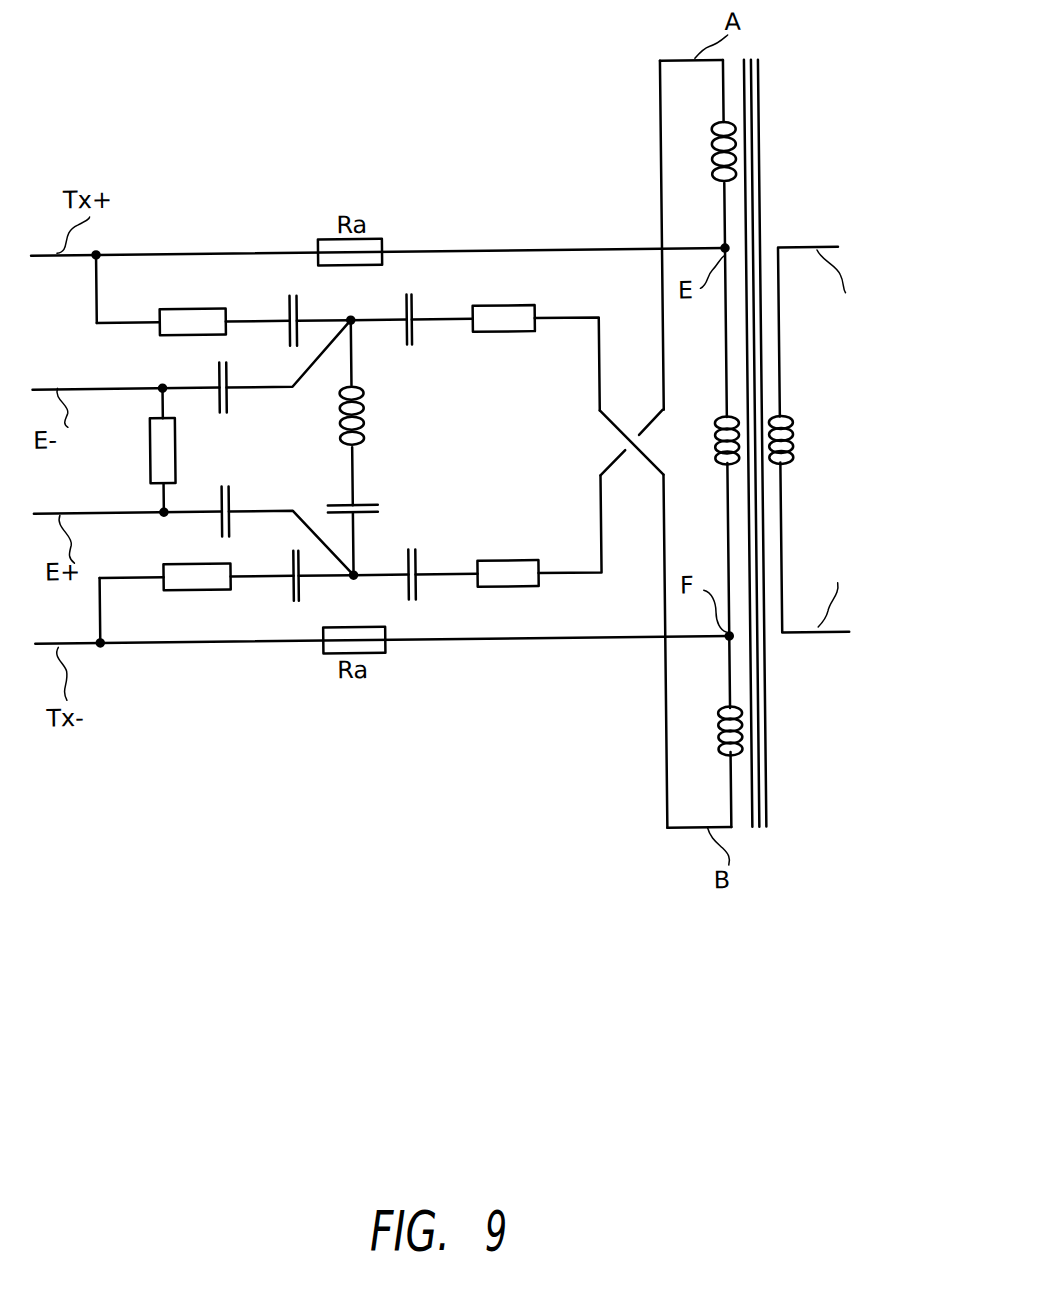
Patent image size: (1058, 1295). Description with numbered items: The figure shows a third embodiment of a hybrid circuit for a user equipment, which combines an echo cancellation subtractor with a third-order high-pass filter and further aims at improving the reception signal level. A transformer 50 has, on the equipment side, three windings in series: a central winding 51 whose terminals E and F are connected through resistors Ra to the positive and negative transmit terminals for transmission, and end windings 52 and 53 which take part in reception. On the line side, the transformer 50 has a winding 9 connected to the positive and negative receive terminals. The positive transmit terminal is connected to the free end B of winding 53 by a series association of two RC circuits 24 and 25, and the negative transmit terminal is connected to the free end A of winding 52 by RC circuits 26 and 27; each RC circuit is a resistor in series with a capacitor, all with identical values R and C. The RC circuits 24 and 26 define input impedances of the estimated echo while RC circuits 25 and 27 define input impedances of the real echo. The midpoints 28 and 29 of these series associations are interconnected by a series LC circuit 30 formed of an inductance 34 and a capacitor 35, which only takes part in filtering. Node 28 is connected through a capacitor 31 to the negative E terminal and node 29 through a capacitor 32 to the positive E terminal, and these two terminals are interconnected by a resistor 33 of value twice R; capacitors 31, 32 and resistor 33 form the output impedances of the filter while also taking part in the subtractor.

The winding 9 is at (793, 428).
The RC circuit 24 is at (237, 299).
The RC circuit 25 is at (441, 356).
The RC circuit 26 is at (243, 594).
The RC circuit 27 is at (451, 541).
The midpoint 28 is at (354, 312).
The midpoint 29 is at (359, 574).
The series LC circuit 30 is at (382, 447).
The capacitor 31 is at (225, 393).
The capacitor 32 is at (228, 495).
The resistor 33 is at (148, 437).
The inductance 34 is at (362, 406).
The capacitor 35 is at (363, 501).
The transformer 50 is at (756, 850).
The central winding 51 is at (711, 432).
The end winding 52 is at (713, 140).
The end winding 53 is at (715, 718).